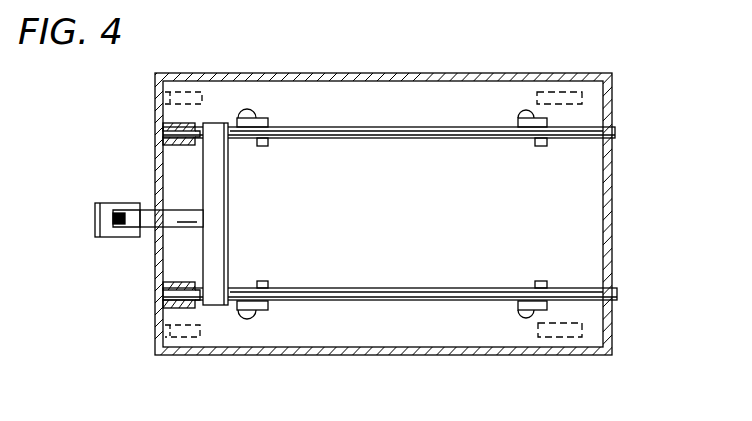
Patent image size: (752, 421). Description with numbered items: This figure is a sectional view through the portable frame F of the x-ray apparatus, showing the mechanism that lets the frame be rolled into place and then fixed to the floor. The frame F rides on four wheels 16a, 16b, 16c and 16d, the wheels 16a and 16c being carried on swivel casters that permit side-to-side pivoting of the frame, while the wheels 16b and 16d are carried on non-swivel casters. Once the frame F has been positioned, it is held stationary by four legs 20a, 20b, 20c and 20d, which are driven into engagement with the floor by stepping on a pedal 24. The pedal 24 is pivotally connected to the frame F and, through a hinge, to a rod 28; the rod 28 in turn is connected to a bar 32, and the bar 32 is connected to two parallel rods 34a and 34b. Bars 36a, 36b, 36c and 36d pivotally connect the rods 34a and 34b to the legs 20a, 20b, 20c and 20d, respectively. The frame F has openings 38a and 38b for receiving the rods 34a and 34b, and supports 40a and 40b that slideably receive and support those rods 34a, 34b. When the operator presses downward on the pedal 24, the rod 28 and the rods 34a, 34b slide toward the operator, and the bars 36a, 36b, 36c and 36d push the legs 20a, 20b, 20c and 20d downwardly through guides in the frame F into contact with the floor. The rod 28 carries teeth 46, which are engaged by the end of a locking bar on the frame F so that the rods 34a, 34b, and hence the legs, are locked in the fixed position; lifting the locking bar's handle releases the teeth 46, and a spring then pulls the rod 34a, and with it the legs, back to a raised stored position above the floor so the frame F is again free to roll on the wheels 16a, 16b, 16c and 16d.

The frame F is at (613, 177).
The wheel 16a is at (195, 92).
The wheel 16b is at (575, 92).
The wheel 16c is at (183, 338).
The wheel 16d is at (567, 337).
The leg 20a is at (245, 110).
The leg 20b is at (522, 108).
The leg 20c is at (240, 318).
The leg 20d is at (522, 318).
The pedal 24 is at (97, 222).
The rod 28 is at (187, 210).
The bar 32 is at (228, 190).
The rod 34a is at (407, 140).
The rod 34b is at (397, 287).
The bar 36a is at (262, 118).
The bar 36b is at (539, 118).
The bar 36c is at (262, 312).
The bar 36d is at (550, 314).
The opening 38a is at (615, 127).
The opening 38b is at (616, 300).
The support 40a is at (170, 118).
The support 40b is at (170, 310).
The teeth 46 is at (157, 229).